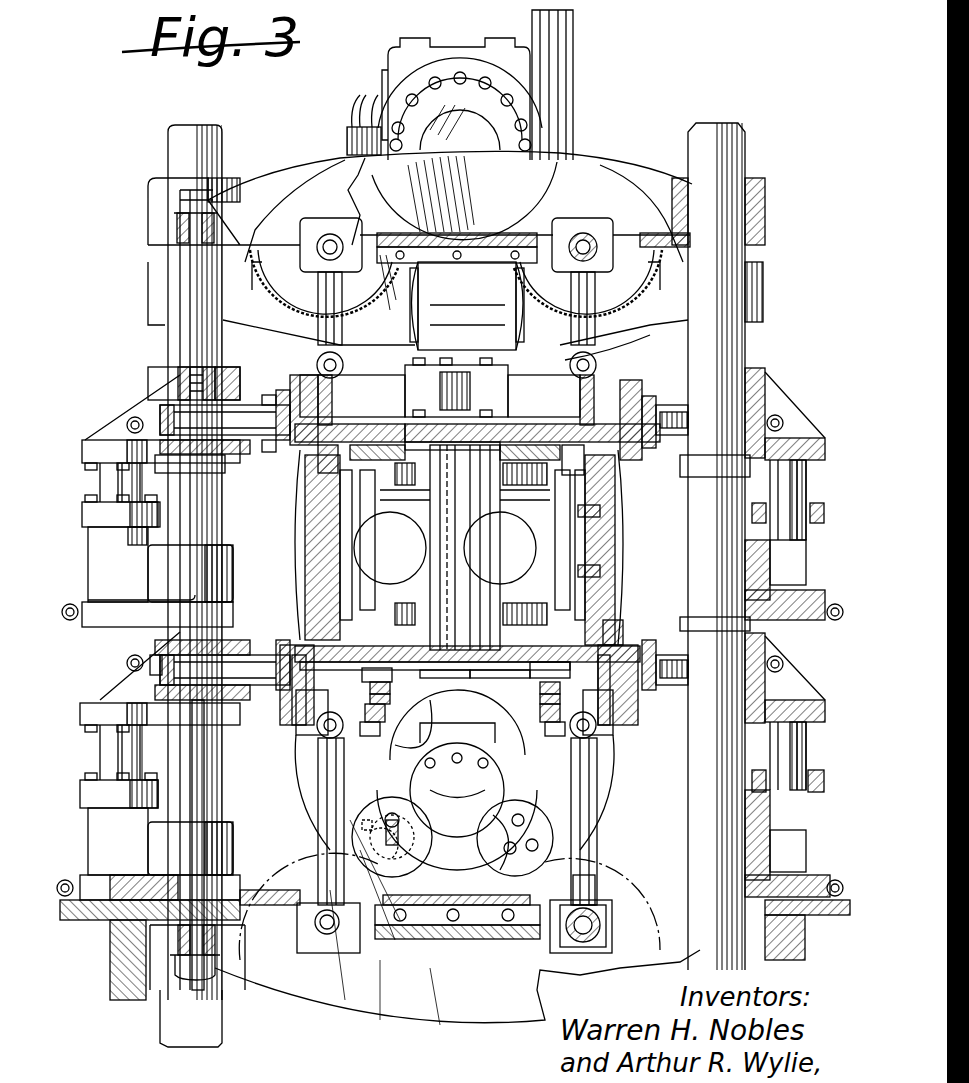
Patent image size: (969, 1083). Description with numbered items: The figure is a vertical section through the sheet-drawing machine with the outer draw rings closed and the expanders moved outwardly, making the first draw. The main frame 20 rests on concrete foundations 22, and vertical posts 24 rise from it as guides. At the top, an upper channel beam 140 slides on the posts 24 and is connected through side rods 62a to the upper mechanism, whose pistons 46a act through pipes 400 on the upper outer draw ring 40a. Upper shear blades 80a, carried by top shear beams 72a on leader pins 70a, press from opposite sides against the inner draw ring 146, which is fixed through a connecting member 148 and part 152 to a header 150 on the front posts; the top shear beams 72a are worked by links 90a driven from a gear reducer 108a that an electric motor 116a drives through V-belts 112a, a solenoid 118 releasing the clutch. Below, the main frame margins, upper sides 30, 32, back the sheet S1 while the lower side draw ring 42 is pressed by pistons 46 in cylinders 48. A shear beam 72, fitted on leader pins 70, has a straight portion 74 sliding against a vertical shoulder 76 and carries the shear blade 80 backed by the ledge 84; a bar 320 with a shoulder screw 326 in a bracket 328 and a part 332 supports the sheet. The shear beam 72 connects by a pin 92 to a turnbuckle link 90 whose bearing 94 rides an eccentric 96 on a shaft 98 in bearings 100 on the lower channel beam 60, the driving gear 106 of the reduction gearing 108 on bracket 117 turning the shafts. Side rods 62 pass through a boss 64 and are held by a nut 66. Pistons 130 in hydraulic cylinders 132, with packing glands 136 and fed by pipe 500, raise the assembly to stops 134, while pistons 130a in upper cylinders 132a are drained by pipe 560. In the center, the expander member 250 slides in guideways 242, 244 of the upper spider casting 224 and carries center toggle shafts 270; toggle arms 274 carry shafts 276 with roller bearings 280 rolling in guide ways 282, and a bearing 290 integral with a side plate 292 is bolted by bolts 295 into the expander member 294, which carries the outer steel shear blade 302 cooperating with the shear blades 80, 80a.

The vertical posts 24 is at (170, 140).
The upper channel beam 140 is at (585, 188).
The gear reducer 108a is at (445, 58).
The V-belts 112a is at (548, 145).
The solenoid 118 is at (346, 141).
The links 90a is at (335, 300).
The electric motor 116a is at (478, 296).
The leader pins 70a is at (318, 368).
The top shear beams 72a is at (300, 390).
The header 150 is at (615, 332).
The side rods 62a is at (190, 343).
The pistons 46a is at (185, 402).
The pipes 400 is at (130, 420).
The connecting member 148 is at (492, 382).
The inner draw ring 146 is at (380, 412).
The nub 152 is at (452, 412).
The shear blades 80a is at (366, 402).
The longitudinal guideway 242 is at (353, 430).
The expander member 250 is at (505, 432).
The center toggle shafts 270 is at (440, 508).
The shafts 276 is at (415, 523).
The bearing 290 is at (415, 540).
The toggle arms 274 is at (420, 566).
The sheet S1 is at (305, 526).
The expander member 294 is at (318, 548).
The side plate 292 is at (320, 566).
The bolts 295 is at (608, 505).
The upper spider casting 224 is at (592, 462).
The outer steel shear blade 302 is at (330, 458).
The guide ways 282 is at (352, 466).
The roller bearings 280 is at (360, 475).
The upper side 30 is at (345, 618).
The shear blade 80 is at (467, 645).
The upper outer draw ring 40a is at (272, 445).
The stops 134 is at (230, 470).
The pistons 130a is at (105, 487).
The upper cylinders 132a is at (105, 546).
The pipe 560 is at (68, 618).
The pistons 130 is at (108, 748).
The packing gland 136 is at (78, 788).
The hydraulic cylinders 132 is at (105, 830).
The pipe 500 is at (70, 882).
The concrete foundations 22 is at (96, 912).
The pistons 46 is at (258, 645).
The cylinders 48 is at (160, 680).
The ledge 84 is at (612, 622).
The vertical shoulder 76 is at (370, 680).
The side draw ring 42 is at (664, 642).
The bar 320 is at (292, 706).
The shear beam 72 is at (290, 718).
The leader pins 70 is at (318, 728).
The pin 92 is at (326, 738).
The turnbuckle link 90 is at (322, 776).
The main frame 20 is at (400, 666).
The longitudinal guideway 244 is at (445, 670).
The upper side 32 is at (492, 670).
The straight portion 74 is at (560, 674).
The bracket 328 is at (538, 692).
The shoulder screw 326 is at (382, 700).
The nut 332 is at (376, 712).
The reduction gearing 108 is at (468, 740).
The driving gear 106 is at (380, 840).
The bracket 117 is at (505, 885).
The lower channel beam 60 is at (465, 935).
The shaft 98 is at (322, 935).
The bearings 100 is at (332, 940).
The eccentric 96 is at (580, 942).
The bearing 94 is at (595, 905).
The boss 64 is at (200, 936).
The nut 66 is at (200, 963).
The side rods 62 is at (198, 793).